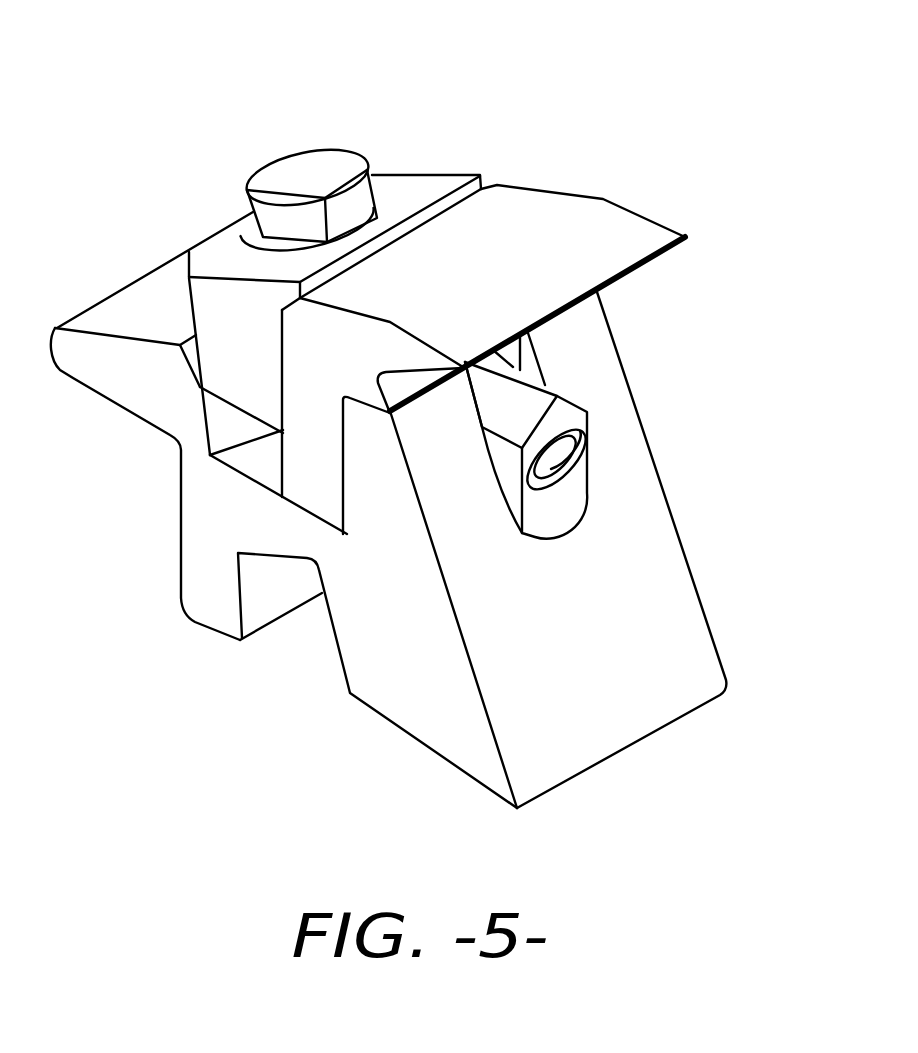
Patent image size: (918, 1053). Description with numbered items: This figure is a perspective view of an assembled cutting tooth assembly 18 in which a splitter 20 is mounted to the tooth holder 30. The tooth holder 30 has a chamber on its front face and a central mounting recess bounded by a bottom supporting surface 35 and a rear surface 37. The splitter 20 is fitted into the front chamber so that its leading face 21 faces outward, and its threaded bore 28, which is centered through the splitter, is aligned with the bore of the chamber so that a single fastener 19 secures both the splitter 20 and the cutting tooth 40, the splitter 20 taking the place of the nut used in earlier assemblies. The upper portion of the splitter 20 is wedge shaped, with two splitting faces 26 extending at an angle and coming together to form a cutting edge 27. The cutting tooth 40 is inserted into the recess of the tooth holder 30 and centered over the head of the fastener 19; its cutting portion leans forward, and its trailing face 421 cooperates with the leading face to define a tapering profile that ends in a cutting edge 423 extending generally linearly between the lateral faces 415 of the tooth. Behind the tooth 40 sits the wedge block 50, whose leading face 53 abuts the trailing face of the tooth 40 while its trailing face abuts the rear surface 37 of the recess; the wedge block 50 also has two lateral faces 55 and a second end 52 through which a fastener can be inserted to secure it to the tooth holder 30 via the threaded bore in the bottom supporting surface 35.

The cutting tooth assembly 18 is at (141, 100).
The fastener 19 is at (303, 170).
The wedge block 50 is at (404, 148).
The second end of wedge block 52 is at (226, 262).
The leading face of wedge block 53 is at (428, 218).
The lateral faces of wedge block 55 is at (223, 339).
The lateral faces of cutting tooth 415 is at (302, 371).
The cutting tooth 40 is at (567, 170).
The trailing face of cutting portion 421 is at (620, 228).
The cutting edge of tooth 423 is at (646, 262).
The cutting edge of splitter 27 is at (530, 372).
The splitting faces 26 is at (490, 417).
The threaded bore of splitter 28 is at (557, 455).
The leading face of splitter 21 is at (565, 500).
The splitter 20 is at (577, 543).
The tooth holder 30 is at (716, 540).
The bottom supporting surface 35 is at (267, 463).
The rear surface of mounting recess 37 is at (203, 367).